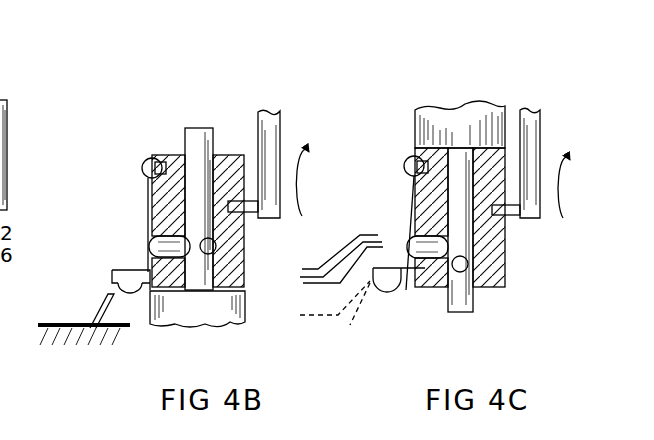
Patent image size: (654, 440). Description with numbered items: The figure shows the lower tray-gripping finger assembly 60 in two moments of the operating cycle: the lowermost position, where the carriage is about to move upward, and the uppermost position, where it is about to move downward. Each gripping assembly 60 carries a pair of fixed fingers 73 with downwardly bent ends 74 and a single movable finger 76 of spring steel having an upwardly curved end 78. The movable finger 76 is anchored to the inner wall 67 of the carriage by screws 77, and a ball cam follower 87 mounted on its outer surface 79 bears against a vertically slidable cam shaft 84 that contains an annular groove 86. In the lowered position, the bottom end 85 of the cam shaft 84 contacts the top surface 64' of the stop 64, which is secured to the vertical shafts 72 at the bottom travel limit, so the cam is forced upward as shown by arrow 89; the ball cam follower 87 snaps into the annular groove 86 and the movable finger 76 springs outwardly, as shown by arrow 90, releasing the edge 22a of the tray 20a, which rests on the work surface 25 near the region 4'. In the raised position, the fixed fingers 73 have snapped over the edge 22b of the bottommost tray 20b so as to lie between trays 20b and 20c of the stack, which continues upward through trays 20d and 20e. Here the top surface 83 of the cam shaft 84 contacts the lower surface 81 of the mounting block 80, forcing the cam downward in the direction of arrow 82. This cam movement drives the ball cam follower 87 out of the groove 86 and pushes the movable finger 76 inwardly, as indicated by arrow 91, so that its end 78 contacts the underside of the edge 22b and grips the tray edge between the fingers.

In FIG. 4B, the gripping finger assembly 60 is at (157, 71).
In FIG. 4C, the gripping finger assembly 60 is at (396, 79).
In FIG. 4B, the arrow 89 is at (210, 53).
In FIG. 4B, the top surface of cam shaft 83 is at (198, 128).
In FIG. 4C, the top surface of cam shaft 83 is at (457, 147).
In FIG. 4B, the cam shaft 84 is at (219, 149).
In FIG. 4C, the cam shaft 84 is at (480, 178).
In FIG. 4B, the annular groove 86 is at (215, 247).
In FIG. 4C, the annular groove 86 is at (470, 264).
In FIG. 4B, the ball cam follower 87 is at (150, 218).
In FIG. 4C, the ball cam follower 87 is at (414, 232).
In FIG. 4B, the screws 77 is at (150, 160).
In FIG. 4C, the screws 77 is at (404, 162).
In FIG. 4B, the inner wall 67 is at (150, 185).
In FIG. 4B, the movable finger 76 is at (146, 228).
In FIG. 4C, the movable finger 76 is at (406, 193).
In FIG. 4B, the fixed fingers 73 is at (136, 267).
In FIG. 4C, the fixed fingers 73 is at (395, 266).
In FIG. 4B, the upwardly curved end 78 is at (120, 280).
In FIG. 4C, the upwardly curved end 78 is at (378, 294).
In FIG. 4B, the downwardly bent end 74 is at (113, 271).
In FIG. 4C, the downwardly bent end 74 is at (358, 233).
In FIG. 4B, the rod 72 is at (257, 137).
In FIG. 4C, the rod 72 is at (532, 163).
In FIG. 4B, the stop 64 is at (222, 322).
In FIG. 4B, the top surface of stop 64' is at (259, 293).
In FIG. 4B, the bottom end of cam shaft 85 is at (173, 292).
In FIG. 4C, the bottom end of cam shaft 85 is at (468, 318).
In FIG. 4B, the tray 20a is at (48, 322).
In FIG. 4B, the arrow 90 is at (146, 310).
In FIG. 4B, the edge of tray 22a is at (112, 292).
In FIG. 4B, the work surface 25 is at (104, 330).
In FIG. 4B, the surface 4' is at (9, 328).
In FIG. 4C, the mounting block 80 is at (412, 110).
In FIG. 4C, the lower surface of mounting block 81 is at (416, 148).
In FIG. 4C, the outer surface of finger 79 is at (398, 286).
In FIG. 4C, the tray 20e is at (322, 268).
In FIG. 4C, the tray 20d is at (302, 269).
In FIG. 4C, the tray 20c is at (316, 332).
In FIG. 4C, the bottommost tray 20b is at (309, 363).
In FIG. 4C, the edge of bottommost tray 22b is at (354, 363).
In FIG. 4C, the arrow 91 is at (386, 337).
In FIG. 4C, the arrow 82 is at (460, 319).